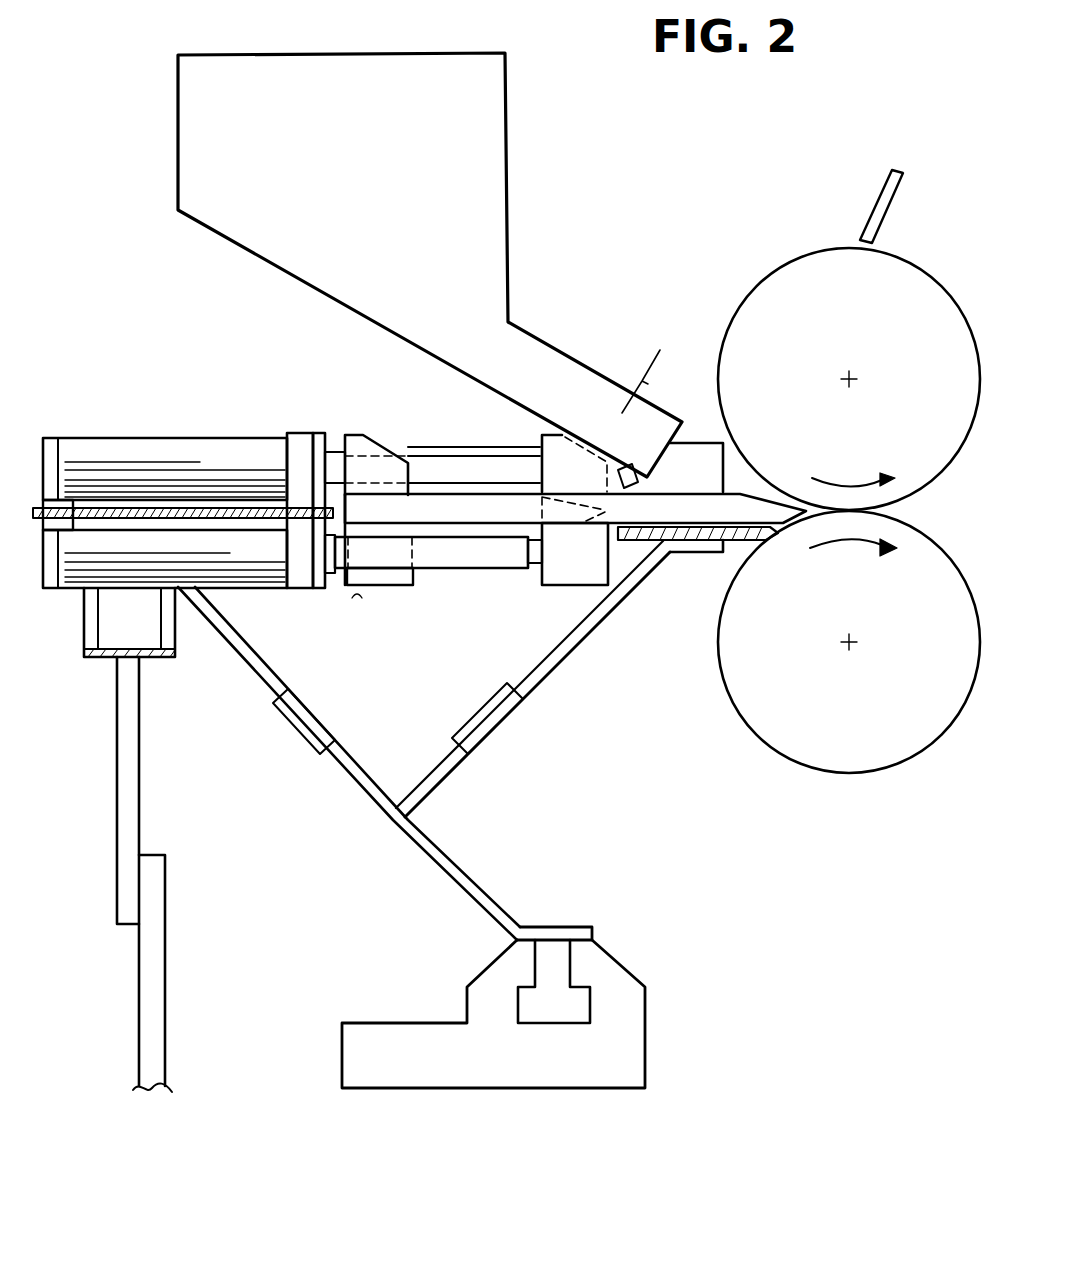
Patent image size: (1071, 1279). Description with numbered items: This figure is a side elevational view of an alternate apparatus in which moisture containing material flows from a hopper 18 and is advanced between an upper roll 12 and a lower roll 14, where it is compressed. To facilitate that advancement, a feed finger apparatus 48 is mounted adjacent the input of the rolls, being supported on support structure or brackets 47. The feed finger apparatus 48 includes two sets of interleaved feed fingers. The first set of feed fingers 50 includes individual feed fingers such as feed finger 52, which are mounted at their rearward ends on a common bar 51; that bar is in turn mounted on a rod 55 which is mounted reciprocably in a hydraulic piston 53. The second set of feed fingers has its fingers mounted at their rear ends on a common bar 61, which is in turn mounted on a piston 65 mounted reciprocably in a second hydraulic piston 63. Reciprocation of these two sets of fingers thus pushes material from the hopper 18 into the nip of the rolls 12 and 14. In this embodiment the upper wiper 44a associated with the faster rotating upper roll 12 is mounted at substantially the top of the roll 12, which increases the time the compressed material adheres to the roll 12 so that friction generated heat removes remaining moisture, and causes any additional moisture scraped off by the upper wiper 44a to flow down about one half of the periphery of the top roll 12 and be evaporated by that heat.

The upper roll 12 is at (900, 257).
The lower roll 14 is at (914, 529).
The hopper 18 is at (510, 120).
The upper wiper 44a is at (885, 178).
The support structure or brackets 47 is at (385, 851).
The feed finger apparatus 48 is at (125, 408).
The set of feed fingers 50 is at (447, 478).
The common bar 51 is at (379, 488).
The feed finger 52 is at (505, 493).
The hydraulic piston 53 is at (226, 438).
The rod 55 is at (332, 432).
The common bar 61 is at (584, 586).
The hydraulic piston 63 is at (258, 589).
The piston 65 is at (480, 569).